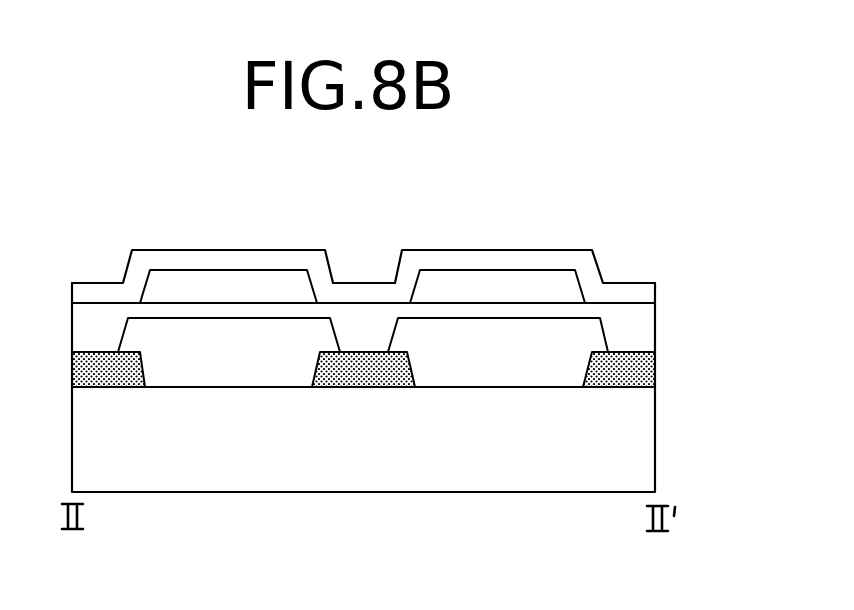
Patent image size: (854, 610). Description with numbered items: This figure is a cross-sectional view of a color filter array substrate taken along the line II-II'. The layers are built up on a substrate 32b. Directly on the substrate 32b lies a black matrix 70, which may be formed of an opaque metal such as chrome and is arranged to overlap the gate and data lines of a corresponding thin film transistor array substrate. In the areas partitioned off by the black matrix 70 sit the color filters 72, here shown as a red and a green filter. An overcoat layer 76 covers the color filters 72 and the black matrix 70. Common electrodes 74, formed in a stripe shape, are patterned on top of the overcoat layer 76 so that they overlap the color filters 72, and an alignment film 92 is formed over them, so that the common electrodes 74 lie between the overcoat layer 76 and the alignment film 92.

The second substrate 32b is at (655, 453).
The black matrix 70 is at (655, 375).
The color filters 72 is at (501, 383).
The overcoat layer 76 is at (655, 335).
The alignment film 92 is at (655, 291).
The common electrodes 74 is at (500, 283).